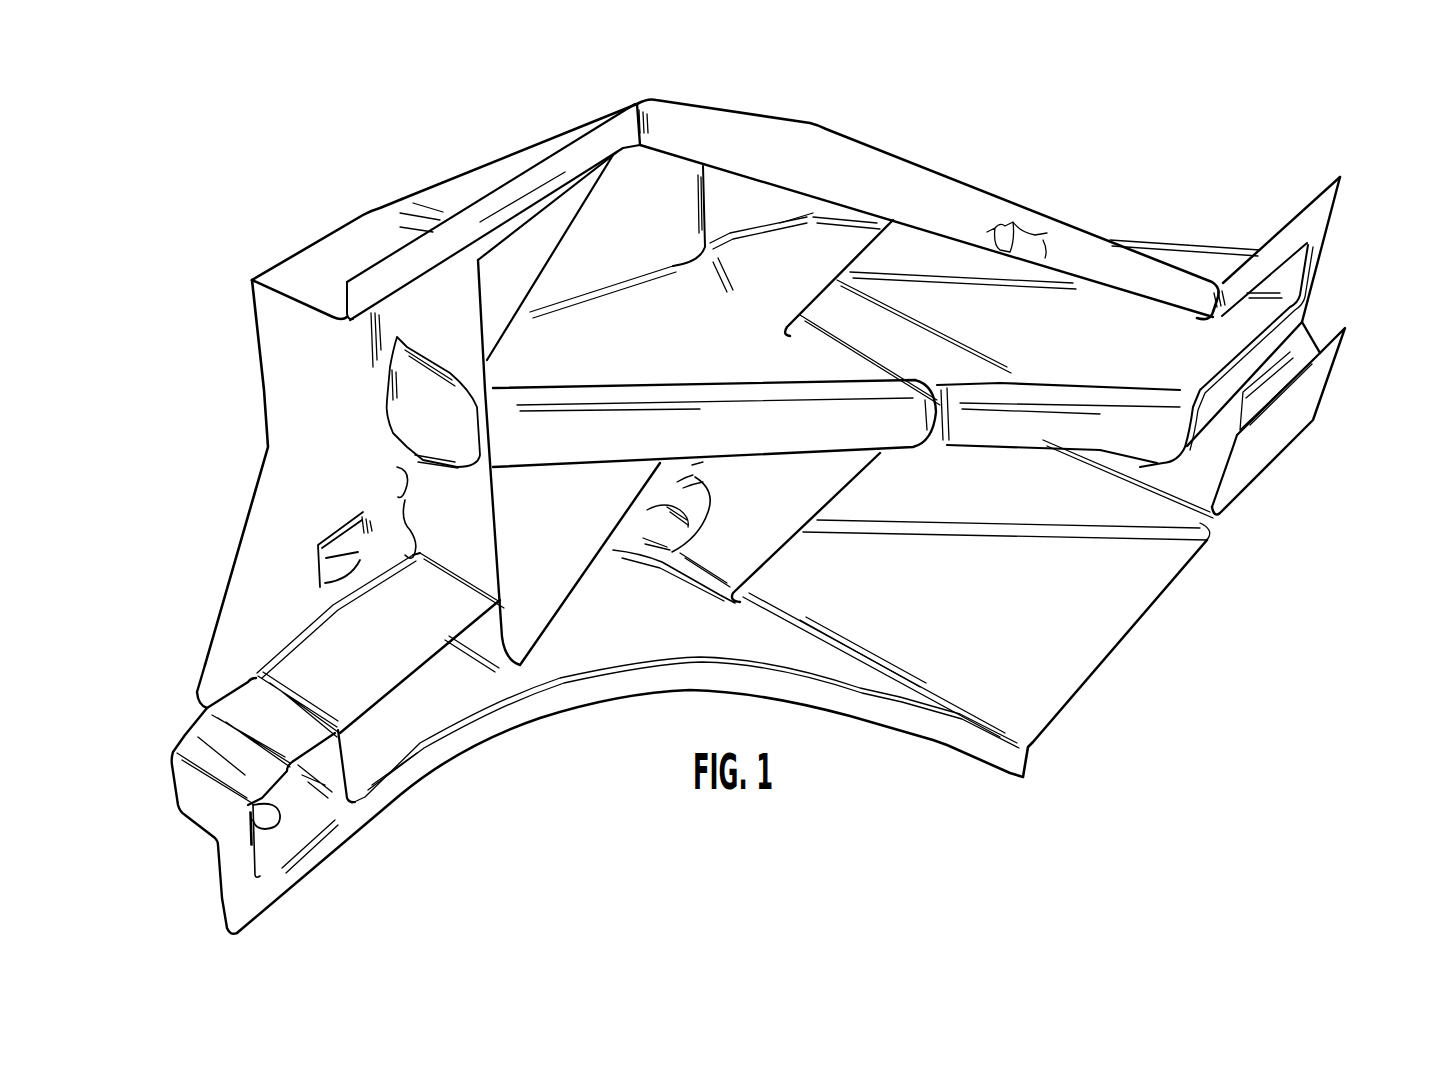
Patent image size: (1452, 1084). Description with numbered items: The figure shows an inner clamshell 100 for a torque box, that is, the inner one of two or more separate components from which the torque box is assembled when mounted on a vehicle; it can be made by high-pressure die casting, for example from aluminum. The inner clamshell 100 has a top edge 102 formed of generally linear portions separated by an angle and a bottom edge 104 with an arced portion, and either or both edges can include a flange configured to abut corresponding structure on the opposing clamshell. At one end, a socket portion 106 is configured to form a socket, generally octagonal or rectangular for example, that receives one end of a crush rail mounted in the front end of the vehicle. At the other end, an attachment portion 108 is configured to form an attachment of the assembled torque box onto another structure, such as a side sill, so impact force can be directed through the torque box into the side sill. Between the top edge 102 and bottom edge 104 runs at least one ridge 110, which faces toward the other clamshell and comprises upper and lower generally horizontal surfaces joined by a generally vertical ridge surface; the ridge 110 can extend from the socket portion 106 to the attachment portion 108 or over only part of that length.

The inner clamshell 100 is at (1225, 678).
The top edge 102 is at (783, 120).
The bottom edge 104 is at (587, 707).
The socket portion 106 is at (247, 605).
The attachment portion 108 is at (1327, 236).
The ridge 110 is at (625, 393).